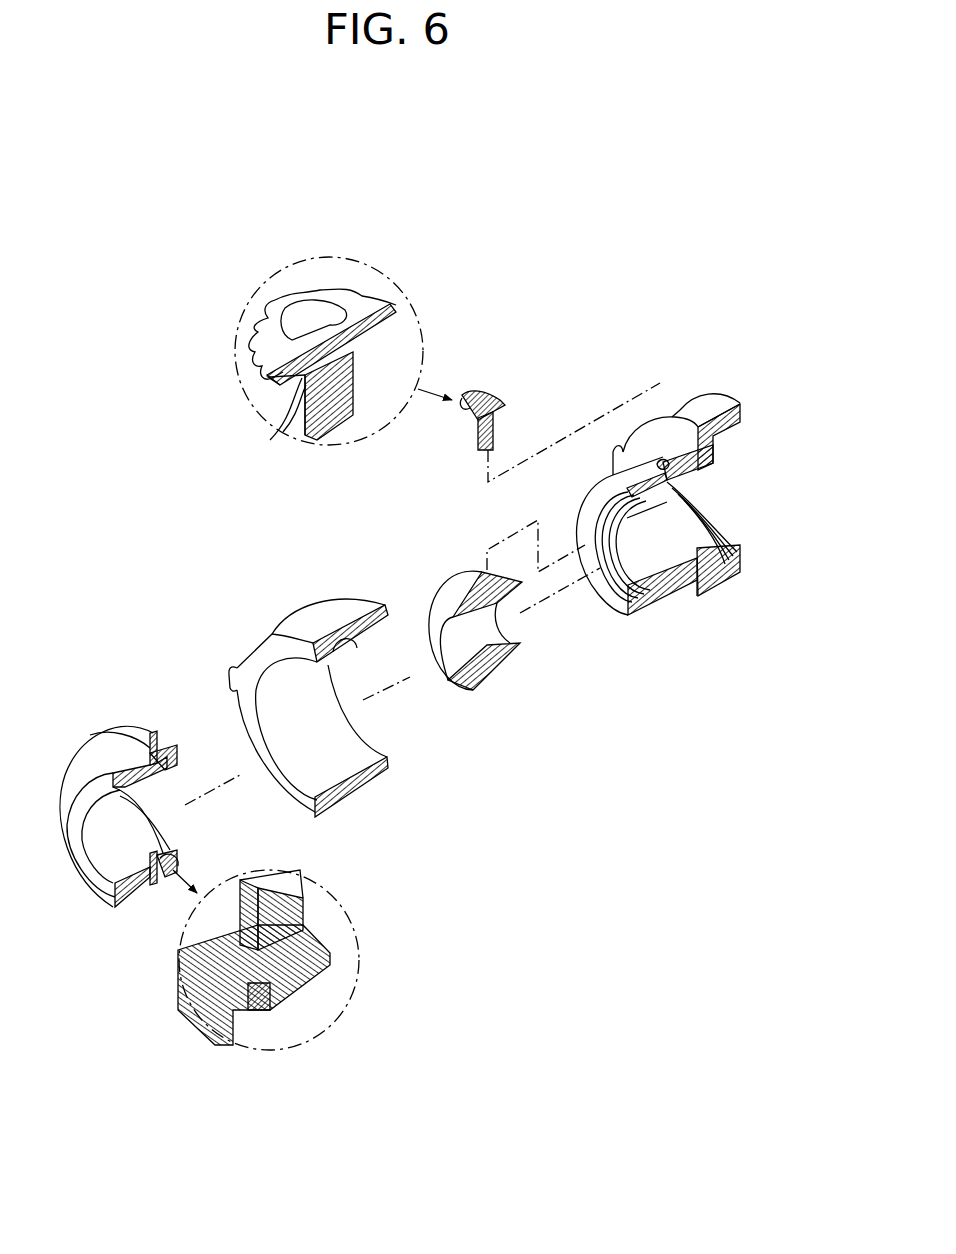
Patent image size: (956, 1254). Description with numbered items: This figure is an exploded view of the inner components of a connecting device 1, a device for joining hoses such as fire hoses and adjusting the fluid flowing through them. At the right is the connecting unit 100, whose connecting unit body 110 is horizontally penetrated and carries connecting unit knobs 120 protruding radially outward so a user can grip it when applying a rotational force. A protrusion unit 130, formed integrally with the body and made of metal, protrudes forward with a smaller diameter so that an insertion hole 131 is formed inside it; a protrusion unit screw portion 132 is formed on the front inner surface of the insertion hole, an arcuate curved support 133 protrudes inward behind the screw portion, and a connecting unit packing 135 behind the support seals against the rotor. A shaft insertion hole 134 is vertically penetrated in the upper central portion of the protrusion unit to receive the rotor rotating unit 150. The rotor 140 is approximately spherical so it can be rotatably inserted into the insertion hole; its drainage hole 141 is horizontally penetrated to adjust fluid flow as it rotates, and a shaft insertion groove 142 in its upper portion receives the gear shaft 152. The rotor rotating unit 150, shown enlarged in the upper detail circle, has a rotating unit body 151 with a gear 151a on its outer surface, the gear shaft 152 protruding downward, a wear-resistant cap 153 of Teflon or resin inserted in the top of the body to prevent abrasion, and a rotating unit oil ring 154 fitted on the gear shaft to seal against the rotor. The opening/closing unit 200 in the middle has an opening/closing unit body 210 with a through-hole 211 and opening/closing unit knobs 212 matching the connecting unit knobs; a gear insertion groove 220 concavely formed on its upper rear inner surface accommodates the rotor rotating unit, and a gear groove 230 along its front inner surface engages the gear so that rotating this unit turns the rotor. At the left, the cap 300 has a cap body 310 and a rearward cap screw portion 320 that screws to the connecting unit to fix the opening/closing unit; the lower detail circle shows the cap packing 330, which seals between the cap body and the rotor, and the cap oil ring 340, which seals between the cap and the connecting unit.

The connecting device 1 is at (722, 162).
The connecting unit 100 is at (677, 528).
The connecting unit body 110 is at (703, 400).
The connecting unit knobs 120 is at (619, 446).
The protrusion unit 130 is at (661, 578).
The insertion hole 131 is at (618, 583).
The protrusion unit screw portion 132 is at (637, 608).
The curved support 133 is at (685, 588).
The shaft insertion hole 134 is at (663, 460).
The connecting unit packing 135 is at (727, 590).
The rotor 140 is at (469, 631).
The drainage hole 141 is at (455, 663).
The shaft insertion groove 142 is at (482, 572).
The rotor rotating unit 150 is at (337, 337).
The rotating unit body 151 is at (350, 293).
The gear 151a is at (260, 352).
The gear shaft 152 is at (350, 392).
The wear-resistant cap 153 is at (322, 300).
The rotating unit oil ring 154 is at (272, 430).
The opening/closing unit 200 is at (329, 682).
The opening/closing unit body 210 is at (363, 787).
The through-hole 211 is at (348, 747).
The opening/closing unit knobs 212 is at (237, 662).
The gear insertion groove 220 is at (393, 615).
The gear groove 230 is at (352, 623).
The cap 300 is at (134, 775).
The cap body 310 is at (105, 740).
The cap screw portion 320 is at (165, 748).
The cap packing 330 is at (303, 917).
The cap oil ring 340 is at (260, 1007).